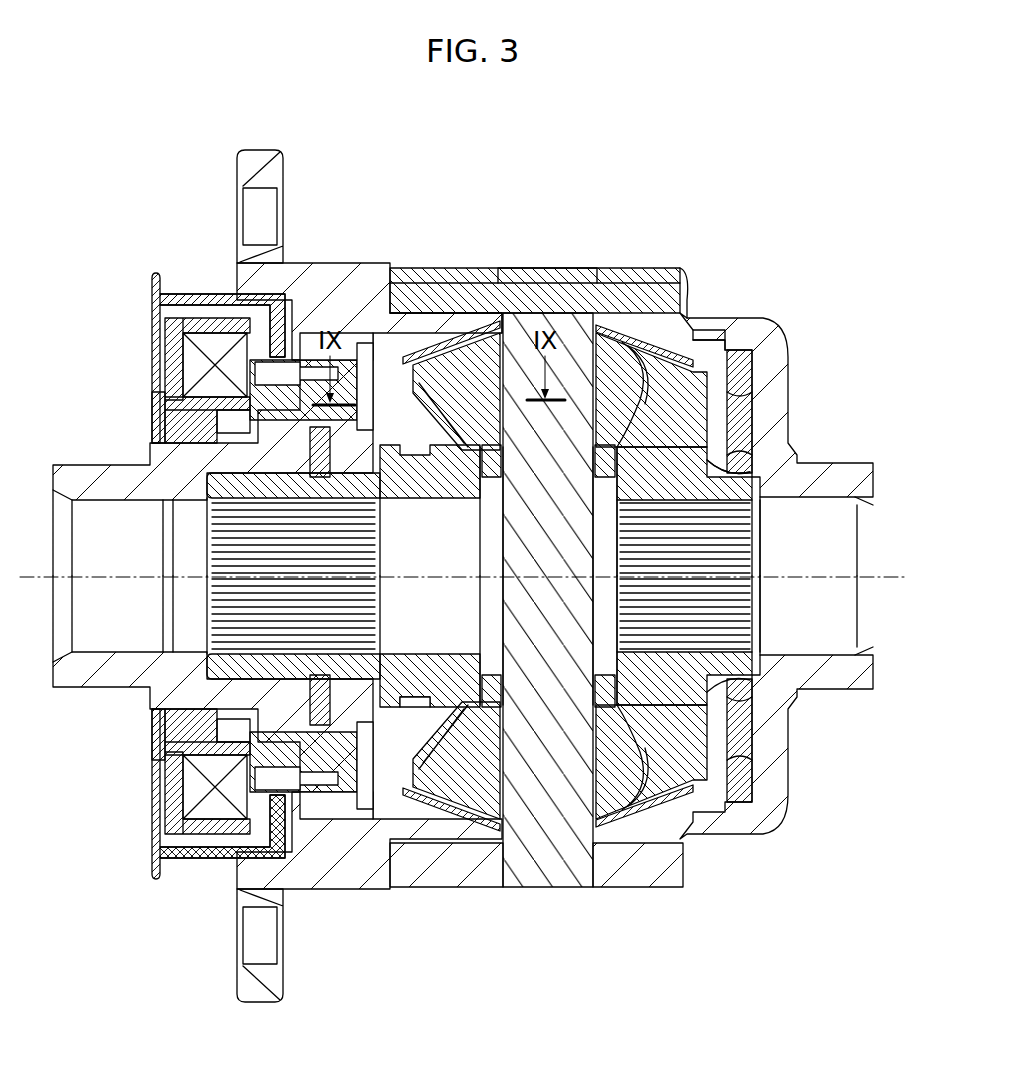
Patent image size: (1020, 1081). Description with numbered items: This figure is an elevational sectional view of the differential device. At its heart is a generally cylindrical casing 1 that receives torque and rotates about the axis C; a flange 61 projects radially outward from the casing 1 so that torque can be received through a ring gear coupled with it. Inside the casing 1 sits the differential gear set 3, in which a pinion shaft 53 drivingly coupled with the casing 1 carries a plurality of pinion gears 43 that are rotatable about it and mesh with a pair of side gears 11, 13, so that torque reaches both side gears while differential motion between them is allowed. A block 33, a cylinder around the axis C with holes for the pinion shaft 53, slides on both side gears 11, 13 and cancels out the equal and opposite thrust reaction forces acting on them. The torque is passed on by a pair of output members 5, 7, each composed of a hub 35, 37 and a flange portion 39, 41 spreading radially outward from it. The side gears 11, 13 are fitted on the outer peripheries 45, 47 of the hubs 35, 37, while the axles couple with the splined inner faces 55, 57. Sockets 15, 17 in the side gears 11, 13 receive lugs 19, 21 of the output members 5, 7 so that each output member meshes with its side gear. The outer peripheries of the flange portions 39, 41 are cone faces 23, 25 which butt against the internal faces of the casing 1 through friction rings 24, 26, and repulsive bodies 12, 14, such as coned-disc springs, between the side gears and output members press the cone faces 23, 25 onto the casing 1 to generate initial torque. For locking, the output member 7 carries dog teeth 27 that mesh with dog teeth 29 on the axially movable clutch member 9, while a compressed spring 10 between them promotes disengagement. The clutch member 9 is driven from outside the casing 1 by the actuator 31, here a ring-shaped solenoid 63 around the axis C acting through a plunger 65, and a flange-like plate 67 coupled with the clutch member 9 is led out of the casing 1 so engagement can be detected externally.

The casing 1 is at (630, 275).
The differential gear set 3 is at (568, 199).
The output member 5 is at (752, 291).
The output member 7 is at (380, 251).
The clutch member 9 is at (300, 362).
The compressed spring 10 is at (237, 878).
The side gear 11 is at (665, 800).
The repulsive body 12 is at (712, 800).
The side gear 13 is at (410, 757).
The repulsive body 14 is at (385, 793).
The socket 15 is at (705, 672).
The socket 17 is at (392, 662).
The lug 19 is at (725, 663).
The lug 21 is at (430, 672).
The cone face 23 is at (745, 337).
The friction ring 24 is at (710, 338).
The cone face 25 is at (368, 340).
The friction ring 26 is at (357, 335).
The dog teeth 27 is at (333, 800).
The dog teeth 29 is at (372, 800).
The actuator 31 is at (143, 284).
The block 33 is at (480, 472).
The hub 35 is at (735, 472).
The hub 37 is at (385, 498).
The flange portion 39 is at (725, 415).
The flange portion 41 is at (455, 463).
The pinion gear 43 is at (440, 360).
The outer periphery 45 is at (705, 700).
The outer periphery 47 is at (478, 688).
The pinion shaft 53 is at (550, 270).
The inner face 55 is at (755, 545).
The inner face 57 is at (205, 545).
The flange 61 is at (287, 160).
The solenoid 63 is at (165, 345).
The plunger 65 is at (152, 432).
The plate 67 is at (163, 283).
The axis C is at (896, 577).